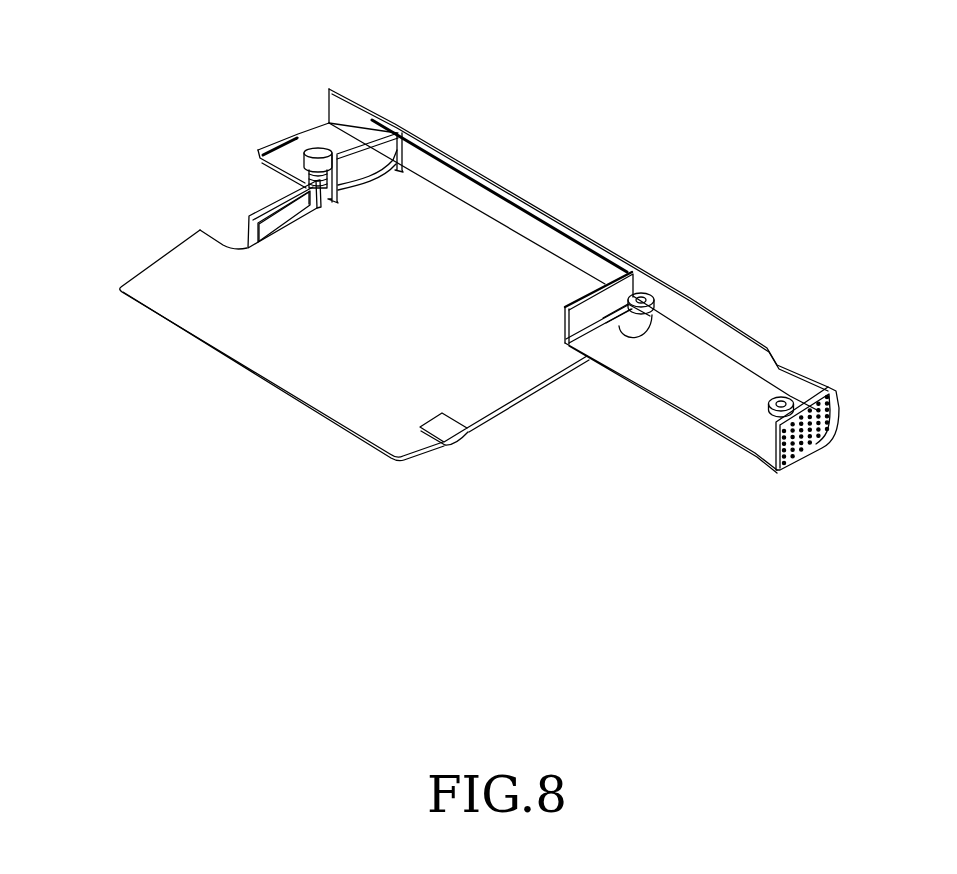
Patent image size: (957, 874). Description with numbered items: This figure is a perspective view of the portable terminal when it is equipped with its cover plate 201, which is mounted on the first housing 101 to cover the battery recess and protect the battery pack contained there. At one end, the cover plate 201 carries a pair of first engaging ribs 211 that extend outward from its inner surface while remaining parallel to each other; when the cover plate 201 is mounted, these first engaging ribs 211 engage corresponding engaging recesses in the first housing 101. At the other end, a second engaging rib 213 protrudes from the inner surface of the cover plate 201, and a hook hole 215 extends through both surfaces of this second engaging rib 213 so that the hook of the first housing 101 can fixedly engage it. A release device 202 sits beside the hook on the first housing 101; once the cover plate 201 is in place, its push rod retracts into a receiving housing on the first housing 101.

The first housing 101 is at (716, 316).
The cover plate 201 is at (153, 258).
The release device 202 is at (316, 150).
The first engaging rib 211 is at (458, 441).
The second engaging rib 213 is at (262, 205).
The hook hole 215 is at (266, 223).